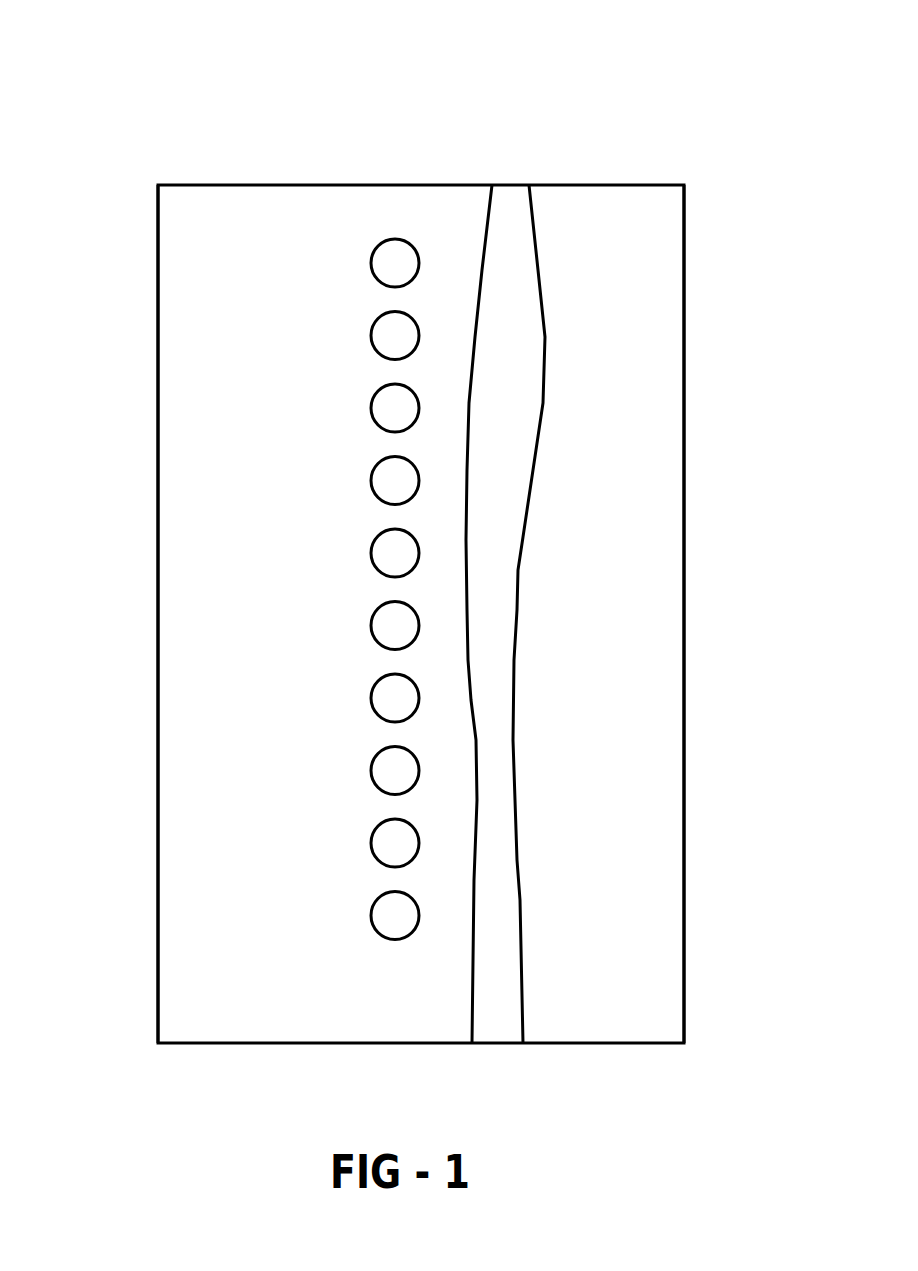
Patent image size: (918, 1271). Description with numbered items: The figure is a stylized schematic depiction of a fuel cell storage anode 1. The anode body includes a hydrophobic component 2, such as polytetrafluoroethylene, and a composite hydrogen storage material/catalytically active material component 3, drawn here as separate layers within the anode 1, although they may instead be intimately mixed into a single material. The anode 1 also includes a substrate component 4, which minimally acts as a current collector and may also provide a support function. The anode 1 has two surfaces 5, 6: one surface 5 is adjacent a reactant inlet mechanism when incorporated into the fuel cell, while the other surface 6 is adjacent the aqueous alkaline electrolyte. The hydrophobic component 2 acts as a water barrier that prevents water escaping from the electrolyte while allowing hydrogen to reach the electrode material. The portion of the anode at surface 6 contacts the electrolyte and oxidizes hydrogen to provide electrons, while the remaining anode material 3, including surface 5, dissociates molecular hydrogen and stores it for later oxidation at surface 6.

The fuel cell storage anode 1 is at (392, 146).
The hydrophobic component 2 is at (509, 349).
The composite hydrogen storage material/catalytically active material component 3 is at (258, 394).
The substrate component 4 is at (380, 772).
The surface 5 is at (158, 678).
The surface 6 is at (684, 623).